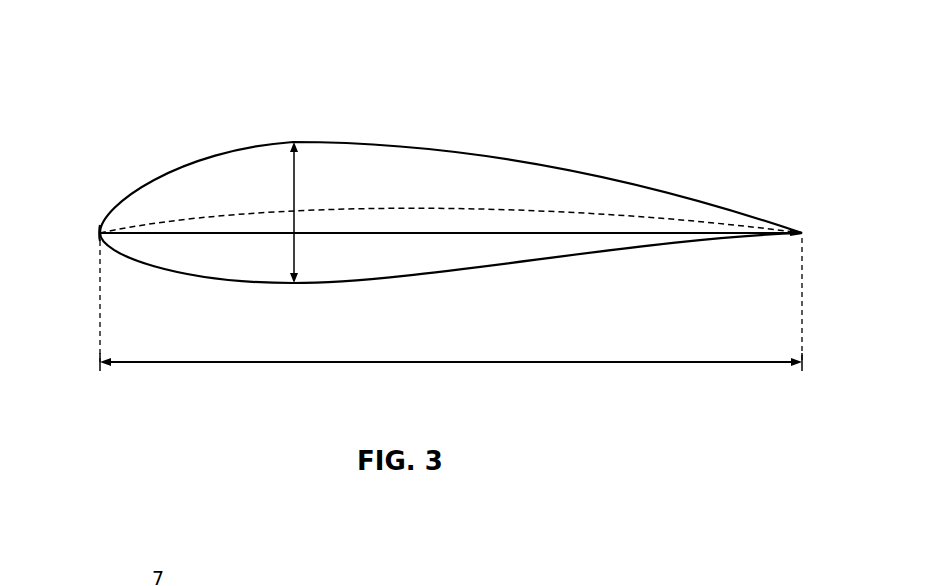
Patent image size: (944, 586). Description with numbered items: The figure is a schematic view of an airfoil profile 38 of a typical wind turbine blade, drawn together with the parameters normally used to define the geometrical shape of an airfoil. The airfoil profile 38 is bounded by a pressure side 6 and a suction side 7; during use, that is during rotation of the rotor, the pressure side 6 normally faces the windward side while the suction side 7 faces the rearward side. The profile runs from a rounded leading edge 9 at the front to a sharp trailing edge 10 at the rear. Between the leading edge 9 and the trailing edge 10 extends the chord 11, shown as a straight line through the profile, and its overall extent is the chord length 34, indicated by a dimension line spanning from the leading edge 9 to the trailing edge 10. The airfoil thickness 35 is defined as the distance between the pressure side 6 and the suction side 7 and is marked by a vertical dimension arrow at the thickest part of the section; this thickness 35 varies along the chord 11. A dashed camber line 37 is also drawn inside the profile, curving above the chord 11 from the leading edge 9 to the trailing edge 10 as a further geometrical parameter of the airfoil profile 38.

The pressure side 6 is at (563, 254).
The suction side 7 is at (407, 141).
The leading edge 9 is at (100, 233).
The trailing edge 10 is at (806, 233).
The chord 11 is at (400, 236).
The chord length 34 is at (450, 362).
The airfoil thickness 35 is at (297, 188).
The camber line 37 is at (195, 218).
The airfoil profile 38 is at (456, 184).